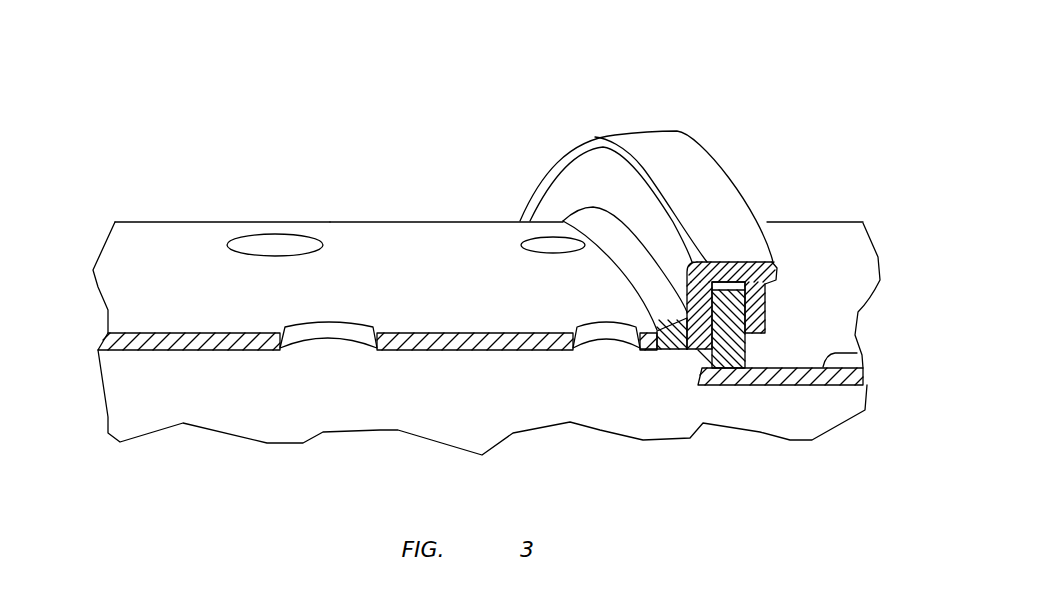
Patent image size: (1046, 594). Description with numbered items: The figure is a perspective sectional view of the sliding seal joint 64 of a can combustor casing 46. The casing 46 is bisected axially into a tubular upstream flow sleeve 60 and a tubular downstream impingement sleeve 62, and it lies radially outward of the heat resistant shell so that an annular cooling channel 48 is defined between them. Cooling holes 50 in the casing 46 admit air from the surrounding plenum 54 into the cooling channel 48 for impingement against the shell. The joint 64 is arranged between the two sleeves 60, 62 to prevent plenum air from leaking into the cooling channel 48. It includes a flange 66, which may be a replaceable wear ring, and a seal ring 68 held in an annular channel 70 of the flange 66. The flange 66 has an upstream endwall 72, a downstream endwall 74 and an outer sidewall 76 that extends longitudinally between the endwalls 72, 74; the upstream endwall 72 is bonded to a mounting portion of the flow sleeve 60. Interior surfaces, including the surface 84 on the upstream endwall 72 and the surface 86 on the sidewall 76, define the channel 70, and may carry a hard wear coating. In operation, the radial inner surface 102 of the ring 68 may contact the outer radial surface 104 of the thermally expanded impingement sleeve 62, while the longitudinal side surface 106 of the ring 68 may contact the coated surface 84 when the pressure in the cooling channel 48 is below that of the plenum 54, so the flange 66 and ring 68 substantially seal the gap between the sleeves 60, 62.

The casing 46 is at (350, 222).
The annular cooling channel 48 is at (187, 403).
The cooling holes 50 is at (271, 240).
The plenum 54 is at (260, 122).
The flow sleeve 60 is at (165, 222).
The impingement sleeve 62 is at (850, 222).
The sliding seal joint 64 is at (683, 122).
The flange 66 is at (717, 155).
The seal ring 68 is at (748, 347).
The annular channel 70 is at (777, 263).
The upstream endwall 72 is at (675, 277).
The downstream endwall 74 is at (767, 313).
The outer sidewall 76 is at (733, 262).
The interior surface 84 is at (693, 310).
The interior surface 86 is at (657, 353).
The radial inner surface 102 is at (712, 337).
The outer radial surface 104 is at (858, 355).
The longitudinal side surface 106 is at (700, 353).